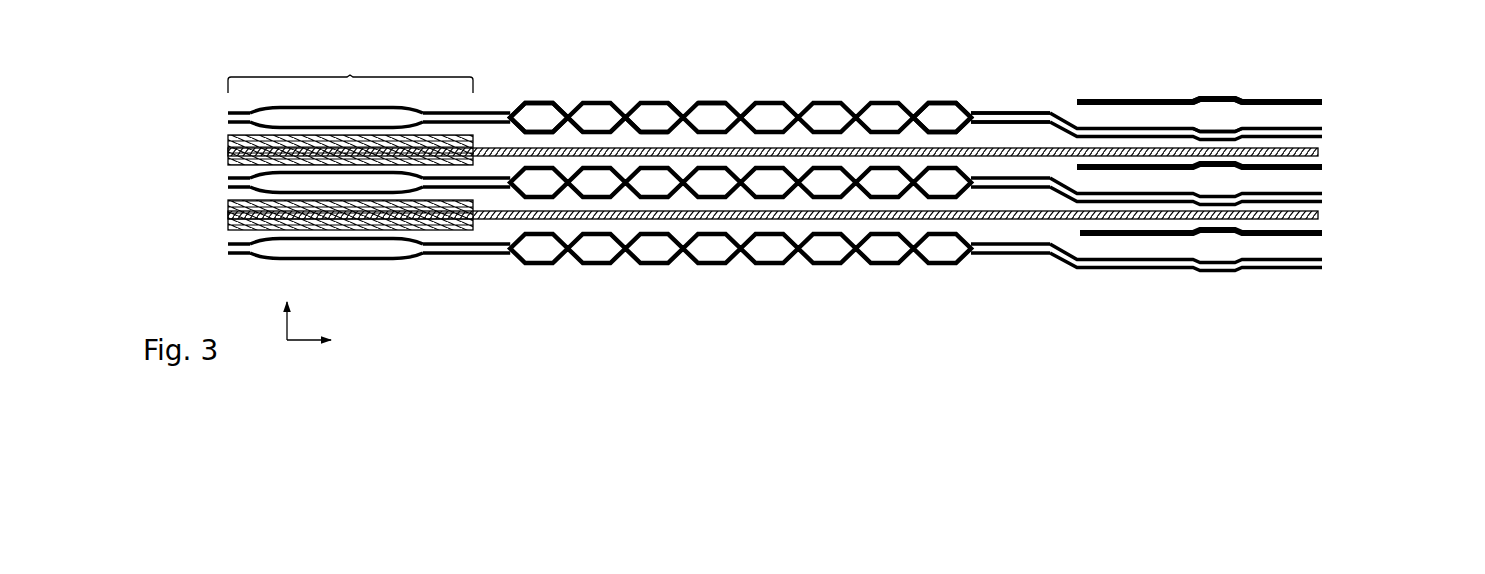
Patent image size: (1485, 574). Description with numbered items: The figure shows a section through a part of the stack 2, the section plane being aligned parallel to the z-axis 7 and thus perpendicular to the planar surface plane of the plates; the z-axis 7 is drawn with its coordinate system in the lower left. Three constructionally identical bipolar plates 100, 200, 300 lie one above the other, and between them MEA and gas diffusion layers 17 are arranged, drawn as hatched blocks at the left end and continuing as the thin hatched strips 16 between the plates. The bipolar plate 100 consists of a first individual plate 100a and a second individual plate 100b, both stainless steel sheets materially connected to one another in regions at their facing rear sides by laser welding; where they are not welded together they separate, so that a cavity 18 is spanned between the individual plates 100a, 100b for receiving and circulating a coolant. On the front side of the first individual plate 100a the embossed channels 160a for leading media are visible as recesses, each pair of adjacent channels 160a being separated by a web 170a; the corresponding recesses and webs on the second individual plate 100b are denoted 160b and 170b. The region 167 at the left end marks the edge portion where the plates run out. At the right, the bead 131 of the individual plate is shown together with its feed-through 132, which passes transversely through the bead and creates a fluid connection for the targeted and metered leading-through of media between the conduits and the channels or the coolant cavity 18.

The stack 2 is at (1218, 68).
The z-axis 7 is at (287, 325).
The weft thread 16 is at (1318, 152).
The MEA and gas diffusion layers 17 is at (242, 140).
The cavity 18 is at (537, 112).
The bipolar plate 100 is at (1324, 113).
The first individual plate 100a is at (997, 113).
The second individual plate 100b is at (987, 123).
The bead 131 is at (1223, 100).
The feed-through 132 is at (1232, 128).
The channel 160a is at (685, 100).
The lower loop section 160b is at (627, 137).
The edge region 167 is at (350, 75).
The web 170a is at (718, 92).
The lower thread segment 170b is at (601, 139).
The bipolar plate 200 is at (1324, 185).
The bipolar plate 300 is at (1324, 247).